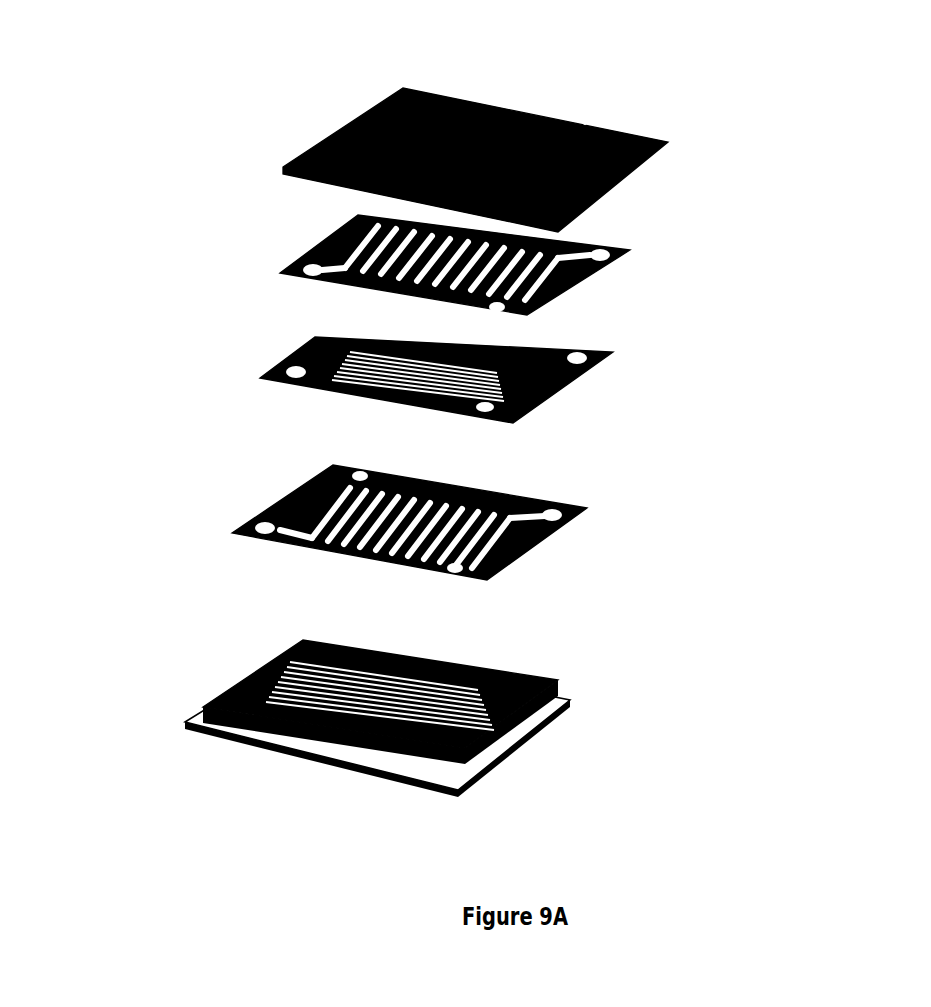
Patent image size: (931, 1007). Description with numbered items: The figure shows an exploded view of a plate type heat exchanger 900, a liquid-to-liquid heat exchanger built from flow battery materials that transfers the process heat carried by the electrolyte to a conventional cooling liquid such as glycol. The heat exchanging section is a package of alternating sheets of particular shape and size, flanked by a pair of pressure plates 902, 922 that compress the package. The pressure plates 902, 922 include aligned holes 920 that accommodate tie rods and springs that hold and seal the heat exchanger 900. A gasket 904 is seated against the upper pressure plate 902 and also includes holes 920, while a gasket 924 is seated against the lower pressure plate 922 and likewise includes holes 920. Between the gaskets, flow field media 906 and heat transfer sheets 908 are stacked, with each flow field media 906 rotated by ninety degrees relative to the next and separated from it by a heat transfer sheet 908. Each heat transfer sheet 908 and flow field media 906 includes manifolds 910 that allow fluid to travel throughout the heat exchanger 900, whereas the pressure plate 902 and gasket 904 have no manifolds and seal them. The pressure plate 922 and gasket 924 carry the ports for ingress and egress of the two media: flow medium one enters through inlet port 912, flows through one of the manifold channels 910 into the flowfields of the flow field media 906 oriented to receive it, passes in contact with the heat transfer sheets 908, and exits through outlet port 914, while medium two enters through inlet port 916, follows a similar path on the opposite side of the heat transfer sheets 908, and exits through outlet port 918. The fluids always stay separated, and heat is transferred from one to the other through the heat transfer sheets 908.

The plate type heat exchanger 900 is at (120, 118).
The pressure plate 902 is at (347, 113).
The gasket 904 is at (640, 190).
The flow field media 906 is at (613, 352).
The heat transfer sheet 908 is at (243, 520).
The manifolds 910 is at (490, 583).
The inlet port 912 is at (403, 812).
The outlet port 914 is at (336, 702).
The inlet port 916 is at (200, 765).
The outlet port 918 is at (565, 757).
The holes 920 is at (605, 122).
The pressure plate 922 is at (487, 777).
The gasket 924 is at (558, 718).